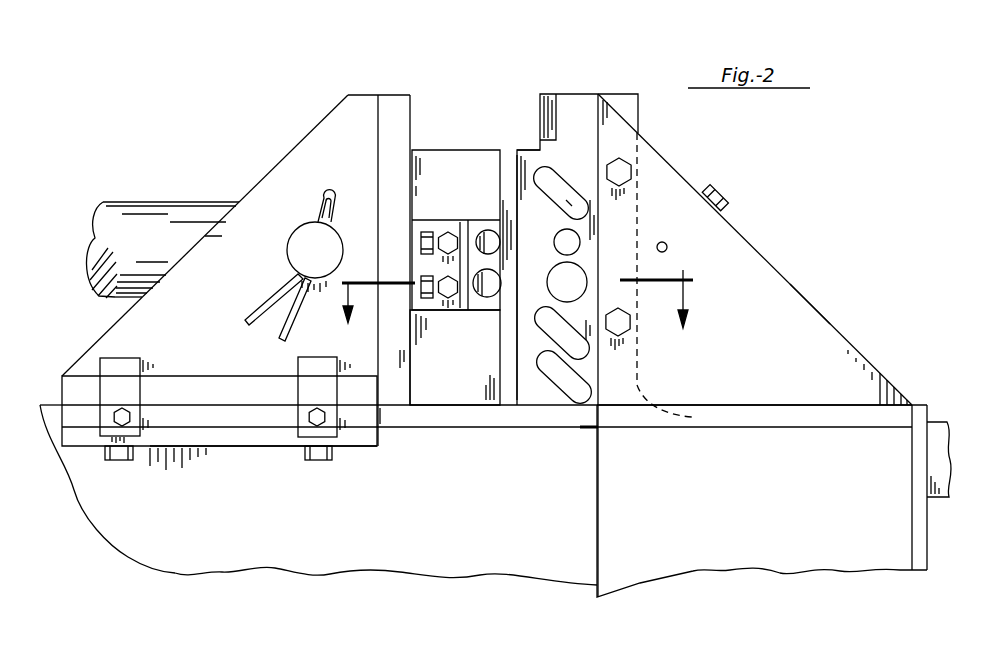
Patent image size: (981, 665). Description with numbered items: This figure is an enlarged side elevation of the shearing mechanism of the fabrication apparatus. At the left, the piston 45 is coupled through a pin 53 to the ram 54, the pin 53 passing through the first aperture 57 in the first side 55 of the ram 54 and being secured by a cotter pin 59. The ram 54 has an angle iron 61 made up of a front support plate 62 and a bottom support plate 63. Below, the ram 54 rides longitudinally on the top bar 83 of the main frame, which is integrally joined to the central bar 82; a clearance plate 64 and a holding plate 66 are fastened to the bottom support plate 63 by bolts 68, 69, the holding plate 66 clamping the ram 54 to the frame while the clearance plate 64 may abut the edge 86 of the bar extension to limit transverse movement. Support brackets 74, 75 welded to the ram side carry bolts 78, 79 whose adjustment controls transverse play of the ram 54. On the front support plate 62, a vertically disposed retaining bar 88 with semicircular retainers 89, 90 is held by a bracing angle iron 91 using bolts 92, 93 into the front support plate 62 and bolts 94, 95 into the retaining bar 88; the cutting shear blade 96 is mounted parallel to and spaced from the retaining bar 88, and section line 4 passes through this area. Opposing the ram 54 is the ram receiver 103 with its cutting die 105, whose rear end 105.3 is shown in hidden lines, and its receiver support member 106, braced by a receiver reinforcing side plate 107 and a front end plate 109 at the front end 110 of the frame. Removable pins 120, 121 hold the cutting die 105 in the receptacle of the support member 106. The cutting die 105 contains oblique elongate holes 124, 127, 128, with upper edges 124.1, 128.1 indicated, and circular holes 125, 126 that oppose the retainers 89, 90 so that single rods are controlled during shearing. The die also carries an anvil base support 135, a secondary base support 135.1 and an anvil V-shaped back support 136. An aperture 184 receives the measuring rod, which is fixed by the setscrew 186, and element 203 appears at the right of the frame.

The section line 4- 4 is at (517, 313).
The piston 45 is at (142, 200).
The pin 53 is at (297, 240).
The ram 54 is at (305, 123).
The first side 55 is at (268, 178).
The first aperture 57 is at (305, 226).
The cotter pin 59 is at (322, 192).
The angle iron 61 is at (383, 95).
The front support plate 62 is at (410, 122).
The bottom support plate 63 is at (70, 393).
The clearance plate 64 is at (203, 418).
The holding plate 66 is at (230, 438).
The bolt 68 is at (122, 462).
The bolt 69 is at (316, 462).
The support bracket 74 is at (98, 362).
The support bracket 75 is at (298, 365).
The bolt 78 is at (125, 412).
The bolt 79 is at (322, 412).
The central bar 82 is at (228, 540).
The top bar 83 is at (523, 428).
The edge 86 is at (477, 422).
The retaining bar 88 is at (476, 222).
The retainer 89 is at (500, 166).
The retainer 90 is at (483, 299).
The bracing angle iron 91 is at (416, 228).
The bolt 92 is at (430, 313).
The bolt 93 is at (420, 270).
The bolt 94 is at (443, 308).
The bolt 95 is at (450, 231).
The cutting shear blade 96 is at (437, 391).
The ram receiver 103 is at (768, 242).
The cutting die 105 is at (503, 135).
The rear end 105.3 is at (686, 410).
The receiver support member 106 is at (805, 300).
The receiver reinforcing side plate 107 is at (722, 522).
The front end plate 109 is at (912, 508).
The front end 110 is at (776, 586).
The removable pin 120 is at (622, 336).
The removable pin 121 is at (626, 158).
The elongate hole 124 is at (552, 163).
The upper edge 124.1 is at (570, 190).
The circular hole 125 is at (562, 241).
The circular hole 126 is at (560, 283).
The elongate hole 127 is at (574, 322).
The elongate hole 128 is at (574, 386).
The upper edge 128.1 is at (598, 427).
The anvil base support 135 is at (553, 146).
The secondary base support 135.1 is at (532, 148).
The anvil V-shaped back support 136 is at (541, 138).
The aperture 184 is at (668, 250).
The setscrew 186 is at (712, 190).
The shaft 203 is at (946, 422).